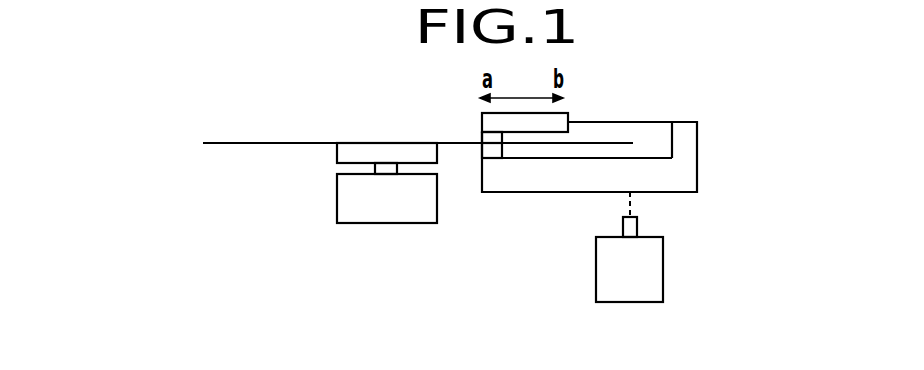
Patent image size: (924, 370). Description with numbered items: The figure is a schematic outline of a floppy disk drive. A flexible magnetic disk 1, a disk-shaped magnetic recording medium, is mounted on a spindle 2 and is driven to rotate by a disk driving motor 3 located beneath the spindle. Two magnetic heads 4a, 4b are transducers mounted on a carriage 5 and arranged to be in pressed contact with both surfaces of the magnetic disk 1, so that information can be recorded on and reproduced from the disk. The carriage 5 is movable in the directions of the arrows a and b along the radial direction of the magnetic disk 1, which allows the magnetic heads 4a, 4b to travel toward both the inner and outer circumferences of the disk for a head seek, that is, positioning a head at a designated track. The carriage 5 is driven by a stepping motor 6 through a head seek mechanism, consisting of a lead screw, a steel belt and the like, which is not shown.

The magnetic disk 1 is at (222, 141).
The spindle 2 is at (345, 150).
The disk driving motor 3 is at (405, 215).
The magnetic head 4a is at (481, 143).
The magnetic head 4b is at (479, 150).
The carriage 5 is at (692, 153).
The stepping motor 6 is at (650, 280).